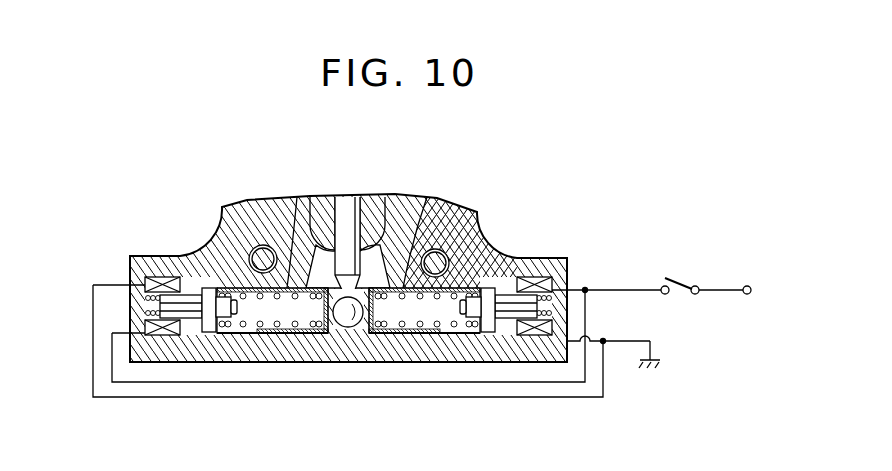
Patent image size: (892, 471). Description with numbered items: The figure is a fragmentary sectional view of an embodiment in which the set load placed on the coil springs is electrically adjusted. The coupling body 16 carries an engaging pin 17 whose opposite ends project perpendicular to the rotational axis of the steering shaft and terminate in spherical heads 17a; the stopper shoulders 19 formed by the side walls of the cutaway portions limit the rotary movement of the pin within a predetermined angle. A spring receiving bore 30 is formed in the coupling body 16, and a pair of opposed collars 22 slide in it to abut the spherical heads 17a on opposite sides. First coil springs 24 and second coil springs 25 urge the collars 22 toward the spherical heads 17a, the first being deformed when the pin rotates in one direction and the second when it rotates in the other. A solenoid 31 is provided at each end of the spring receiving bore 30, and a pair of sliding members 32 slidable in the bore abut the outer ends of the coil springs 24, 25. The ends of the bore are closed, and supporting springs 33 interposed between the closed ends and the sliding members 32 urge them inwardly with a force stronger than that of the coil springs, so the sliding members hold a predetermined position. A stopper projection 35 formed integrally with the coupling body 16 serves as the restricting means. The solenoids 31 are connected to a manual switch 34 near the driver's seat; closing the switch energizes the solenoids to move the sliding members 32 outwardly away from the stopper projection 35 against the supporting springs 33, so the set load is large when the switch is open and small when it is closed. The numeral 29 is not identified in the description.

The coupling body 16 is at (218, 228).
The engaging pin 17 is at (345, 205).
The spherical heads 17a is at (362, 212).
The stopper shoulders 19 is at (299, 210).
The collars 22 is at (290, 204).
The first coil springs 24 is at (490, 250).
The second coil springs 25 is at (238, 284).
The casing 29 is at (134, 251).
The spring receiving bore 30 is at (466, 240).
The solenoid 31 is at (156, 276).
The sliding members 32 is at (193, 319).
The supporting springs 33 is at (148, 324).
The manual switch 34 is at (684, 270).
The stopper projection 35 is at (347, 330).